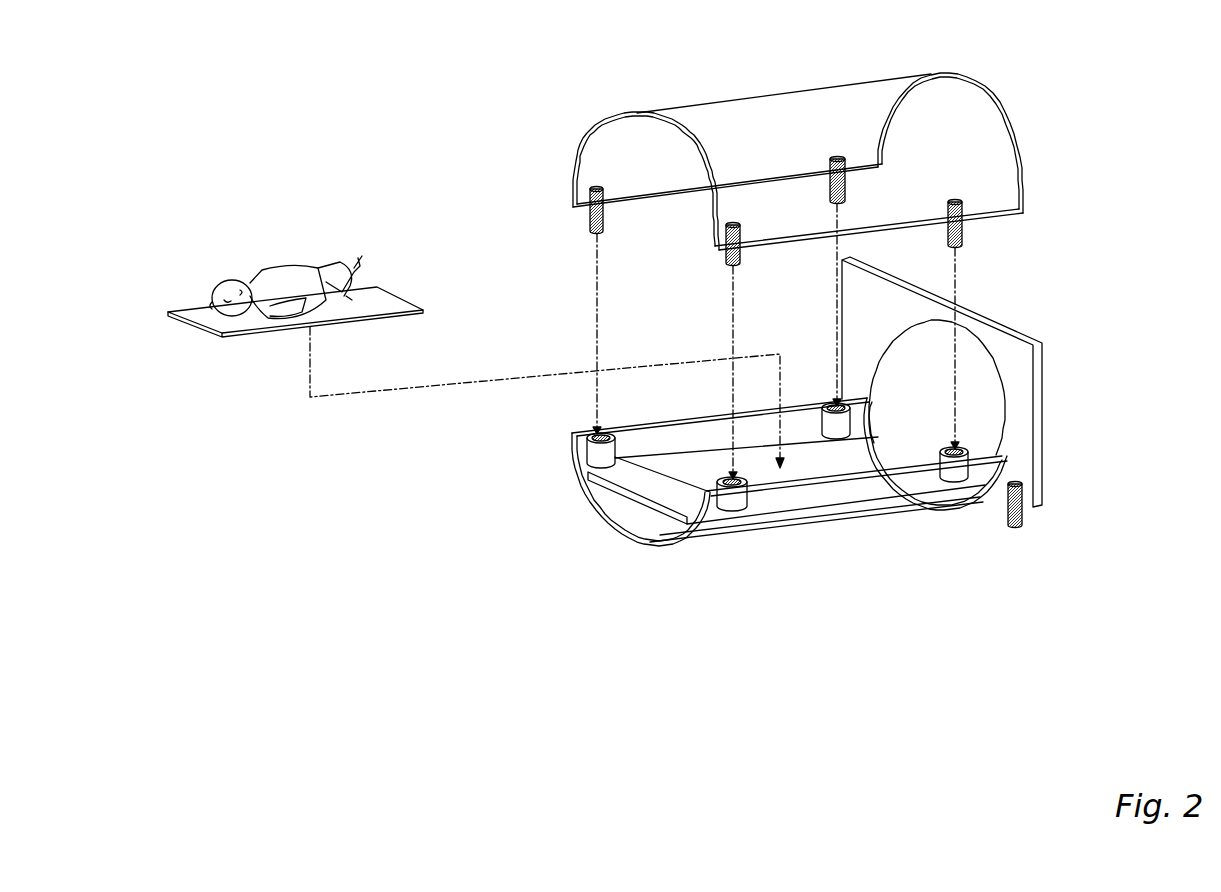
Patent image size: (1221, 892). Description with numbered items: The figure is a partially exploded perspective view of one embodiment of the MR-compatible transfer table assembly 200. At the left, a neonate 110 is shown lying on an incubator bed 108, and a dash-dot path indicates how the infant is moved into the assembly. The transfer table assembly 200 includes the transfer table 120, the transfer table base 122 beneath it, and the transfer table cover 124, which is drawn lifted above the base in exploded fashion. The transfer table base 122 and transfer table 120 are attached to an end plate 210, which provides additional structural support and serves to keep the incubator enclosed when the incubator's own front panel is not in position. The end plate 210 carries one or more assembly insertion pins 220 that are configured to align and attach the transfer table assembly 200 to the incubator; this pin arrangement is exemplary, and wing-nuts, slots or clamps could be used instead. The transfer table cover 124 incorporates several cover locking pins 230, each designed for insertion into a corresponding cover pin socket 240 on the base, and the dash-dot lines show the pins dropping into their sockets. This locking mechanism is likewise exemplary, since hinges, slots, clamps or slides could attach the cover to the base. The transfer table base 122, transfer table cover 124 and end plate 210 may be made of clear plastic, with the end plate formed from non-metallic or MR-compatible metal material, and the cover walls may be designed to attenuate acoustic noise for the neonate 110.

The neonate 110 is at (225, 290).
The incubator bed 108 is at (375, 304).
The transfer table cover 124 is at (988, 93).
The cover locking pins 230 is at (588, 208).
The end plate 210 is at (1038, 413).
The assembly insertion pins 220 is at (1022, 524).
The cover pin sockets 240 is at (585, 447).
The transfer table 120 is at (642, 498).
The transfer table base 122 is at (767, 532).
The transfer table assembly 200 is at (605, 750).